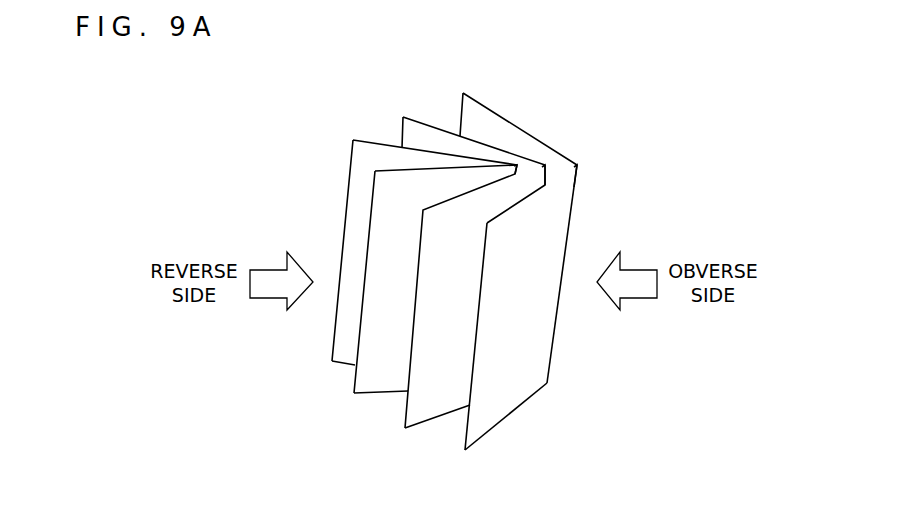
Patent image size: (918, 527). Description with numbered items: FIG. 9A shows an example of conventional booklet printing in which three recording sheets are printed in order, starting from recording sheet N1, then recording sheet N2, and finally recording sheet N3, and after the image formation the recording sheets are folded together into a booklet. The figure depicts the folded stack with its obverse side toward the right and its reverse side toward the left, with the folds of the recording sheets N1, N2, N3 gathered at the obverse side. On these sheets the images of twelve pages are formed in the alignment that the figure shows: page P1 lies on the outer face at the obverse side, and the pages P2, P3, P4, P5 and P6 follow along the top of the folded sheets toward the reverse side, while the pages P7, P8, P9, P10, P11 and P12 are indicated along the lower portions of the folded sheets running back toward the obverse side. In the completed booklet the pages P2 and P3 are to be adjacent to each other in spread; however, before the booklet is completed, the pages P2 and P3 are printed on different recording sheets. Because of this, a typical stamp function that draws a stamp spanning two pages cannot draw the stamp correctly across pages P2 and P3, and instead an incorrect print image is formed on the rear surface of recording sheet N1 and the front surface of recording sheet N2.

The page P1 is at (493, 107).
The page P2 is at (479, 127).
The page P3 is at (432, 124).
The page P4 is at (380, 132).
The page P5 is at (360, 137).
The page P6 is at (362, 158).
The page P7 is at (351, 380).
The page P8 is at (372, 383).
The page P9 is at (404, 412).
The page P10 is at (431, 414).
The page P11 is at (463, 436).
The page P12 is at (488, 427).
The recording sheet N1 is at (556, 152).
The recording sheet N2 is at (518, 145).
The recording sheet N3 is at (495, 152).